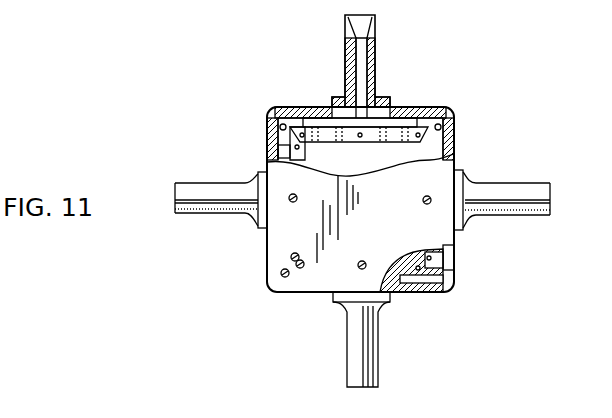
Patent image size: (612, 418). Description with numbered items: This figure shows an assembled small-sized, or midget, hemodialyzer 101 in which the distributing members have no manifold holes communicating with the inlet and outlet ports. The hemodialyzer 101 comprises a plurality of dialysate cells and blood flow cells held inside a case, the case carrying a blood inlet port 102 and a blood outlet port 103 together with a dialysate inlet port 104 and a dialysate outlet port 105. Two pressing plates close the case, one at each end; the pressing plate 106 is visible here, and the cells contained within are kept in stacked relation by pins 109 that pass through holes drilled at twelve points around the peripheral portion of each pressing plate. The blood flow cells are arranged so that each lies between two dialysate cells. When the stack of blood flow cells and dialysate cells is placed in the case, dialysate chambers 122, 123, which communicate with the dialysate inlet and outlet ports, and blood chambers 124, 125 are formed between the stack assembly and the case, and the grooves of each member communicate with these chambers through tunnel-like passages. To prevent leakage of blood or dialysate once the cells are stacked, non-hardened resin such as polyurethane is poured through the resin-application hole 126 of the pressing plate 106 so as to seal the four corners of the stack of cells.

The hemodialyzer 101 is at (462, 104).
The blood inlet port 102 is at (510, 183).
The blood outlet port 103 is at (173, 206).
The dialysate inlet port 104 is at (377, 32).
The dialysate outlet port 105 is at (379, 370).
The pressing plate 106 is at (268, 243).
The pin 109 is at (358, 267).
The dialysate chamber 122 is at (387, 121).
The dialysate chamber 123 is at (398, 293).
The blood chamber 124 is at (455, 254).
The blood chamber 125 is at (280, 154).
The resin-application hole 126 is at (283, 277).